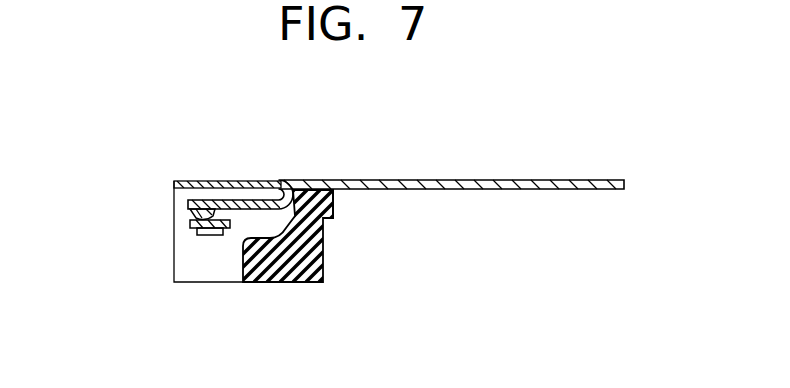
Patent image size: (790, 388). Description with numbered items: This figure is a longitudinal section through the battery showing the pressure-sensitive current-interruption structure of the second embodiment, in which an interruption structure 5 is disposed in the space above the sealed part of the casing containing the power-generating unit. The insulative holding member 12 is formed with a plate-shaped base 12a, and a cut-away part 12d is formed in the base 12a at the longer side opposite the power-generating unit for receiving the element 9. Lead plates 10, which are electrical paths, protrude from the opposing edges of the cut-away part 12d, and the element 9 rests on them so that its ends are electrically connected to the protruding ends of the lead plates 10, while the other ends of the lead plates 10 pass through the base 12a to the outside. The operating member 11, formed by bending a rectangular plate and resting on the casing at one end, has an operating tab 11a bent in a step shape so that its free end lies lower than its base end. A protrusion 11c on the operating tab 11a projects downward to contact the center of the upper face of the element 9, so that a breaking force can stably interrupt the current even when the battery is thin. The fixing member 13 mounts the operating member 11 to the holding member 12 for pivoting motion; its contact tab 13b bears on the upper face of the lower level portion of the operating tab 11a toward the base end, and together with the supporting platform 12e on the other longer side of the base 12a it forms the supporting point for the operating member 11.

The interruption structure 5 is at (153, 168).
The element 9 is at (190, 224).
The lead plates 10 is at (210, 236).
The operating member 11 is at (462, 179).
The operating tab 11a is at (243, 200).
The protrusion 11c is at (190, 212).
The holding member 12 is at (324, 265).
The base 12a is at (293, 265).
The cut-away part 12d is at (215, 263).
The supporting platform 12e is at (326, 198).
The fixing member 13 is at (198, 180).
The contact tab 13b is at (283, 183).